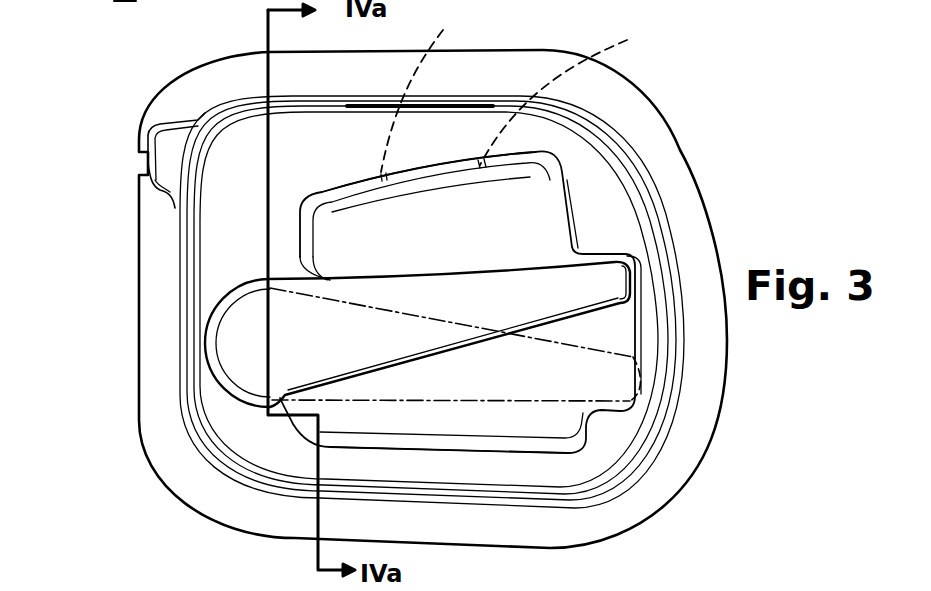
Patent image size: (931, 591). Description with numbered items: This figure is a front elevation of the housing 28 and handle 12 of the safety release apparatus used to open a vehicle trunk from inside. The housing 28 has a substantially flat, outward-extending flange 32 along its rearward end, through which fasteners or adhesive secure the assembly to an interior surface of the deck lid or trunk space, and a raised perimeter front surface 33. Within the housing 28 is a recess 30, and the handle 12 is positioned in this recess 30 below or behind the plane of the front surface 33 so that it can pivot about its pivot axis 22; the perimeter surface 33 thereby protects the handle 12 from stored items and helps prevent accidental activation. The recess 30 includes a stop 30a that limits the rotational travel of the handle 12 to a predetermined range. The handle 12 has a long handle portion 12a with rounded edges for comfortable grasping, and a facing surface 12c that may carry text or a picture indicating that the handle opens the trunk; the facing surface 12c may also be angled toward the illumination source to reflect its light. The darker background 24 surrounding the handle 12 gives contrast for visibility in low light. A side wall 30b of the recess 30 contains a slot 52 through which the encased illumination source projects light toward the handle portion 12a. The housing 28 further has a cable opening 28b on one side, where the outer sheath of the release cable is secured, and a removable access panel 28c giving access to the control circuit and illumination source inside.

The handle 12 is at (240, 338).
The handle portion 12a is at (388, 332).
The facing surface 12c is at (547, 283).
The pivot axis 22 is at (485, 562).
The background 24 is at (523, 228).
The housing 28 is at (223, 457).
The cable opening 28b is at (147, 165).
The removable access panel 28c is at (490, 103).
The recess 30 is at (533, 375).
The stop 30a is at (600, 408).
The side wall 30b is at (427, 187).
The flange 32 is at (678, 472).
The front surface 33 is at (223, 242).
The slot 52 is at (521, 94).